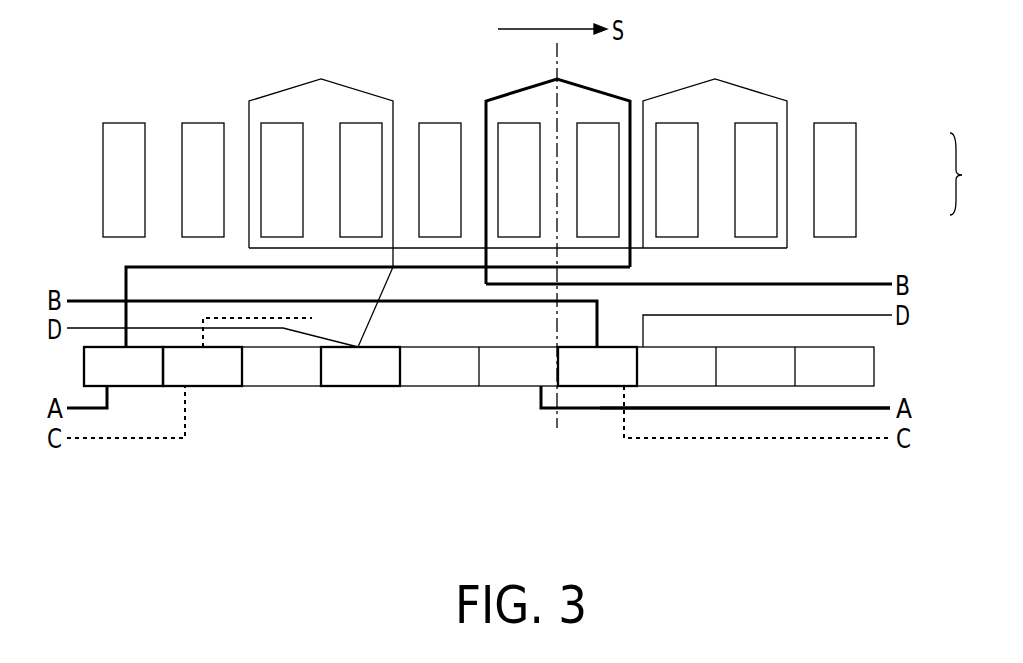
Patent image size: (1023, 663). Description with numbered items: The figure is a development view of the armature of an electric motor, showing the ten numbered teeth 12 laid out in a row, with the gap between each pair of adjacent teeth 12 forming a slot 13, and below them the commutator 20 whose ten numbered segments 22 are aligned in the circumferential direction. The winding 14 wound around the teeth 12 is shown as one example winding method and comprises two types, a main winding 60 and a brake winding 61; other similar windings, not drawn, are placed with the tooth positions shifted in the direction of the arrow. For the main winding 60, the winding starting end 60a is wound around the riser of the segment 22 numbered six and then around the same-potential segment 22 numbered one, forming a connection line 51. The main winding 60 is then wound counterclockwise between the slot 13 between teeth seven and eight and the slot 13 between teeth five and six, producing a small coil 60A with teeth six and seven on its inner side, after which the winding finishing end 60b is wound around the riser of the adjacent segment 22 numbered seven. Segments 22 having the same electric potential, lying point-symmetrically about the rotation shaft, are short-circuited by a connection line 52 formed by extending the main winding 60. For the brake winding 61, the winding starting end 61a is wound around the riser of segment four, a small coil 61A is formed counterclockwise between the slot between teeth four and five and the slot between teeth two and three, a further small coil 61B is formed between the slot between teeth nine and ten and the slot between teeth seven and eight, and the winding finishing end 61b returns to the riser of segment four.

The tooth 12 is at (110, 212).
The slot 13 is at (158, 150).
The winding 14 is at (972, 174).
The commutator 20 is at (530, 377).
The segment 22 is at (873, 360).
The connection line 51 is at (780, 408).
The connection line 52 is at (717, 438).
The main winding 60 is at (508, 242).
The small coil 60A is at (502, 95).
The winding starting end 60a is at (538, 390).
The winding finishing end 60b is at (597, 345).
The brake winding 61 is at (507, 238).
The small coil 61A is at (287, 88).
The small coil 61B is at (753, 90).
The winding starting end 61a is at (372, 320).
The winding finishing end 61b is at (312, 335).